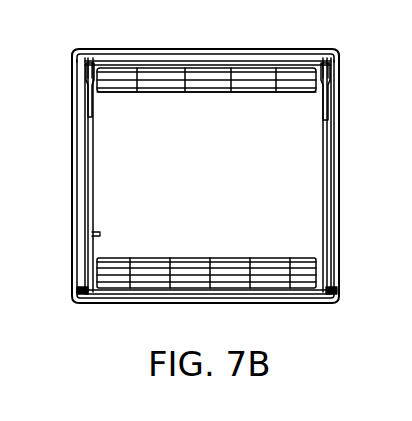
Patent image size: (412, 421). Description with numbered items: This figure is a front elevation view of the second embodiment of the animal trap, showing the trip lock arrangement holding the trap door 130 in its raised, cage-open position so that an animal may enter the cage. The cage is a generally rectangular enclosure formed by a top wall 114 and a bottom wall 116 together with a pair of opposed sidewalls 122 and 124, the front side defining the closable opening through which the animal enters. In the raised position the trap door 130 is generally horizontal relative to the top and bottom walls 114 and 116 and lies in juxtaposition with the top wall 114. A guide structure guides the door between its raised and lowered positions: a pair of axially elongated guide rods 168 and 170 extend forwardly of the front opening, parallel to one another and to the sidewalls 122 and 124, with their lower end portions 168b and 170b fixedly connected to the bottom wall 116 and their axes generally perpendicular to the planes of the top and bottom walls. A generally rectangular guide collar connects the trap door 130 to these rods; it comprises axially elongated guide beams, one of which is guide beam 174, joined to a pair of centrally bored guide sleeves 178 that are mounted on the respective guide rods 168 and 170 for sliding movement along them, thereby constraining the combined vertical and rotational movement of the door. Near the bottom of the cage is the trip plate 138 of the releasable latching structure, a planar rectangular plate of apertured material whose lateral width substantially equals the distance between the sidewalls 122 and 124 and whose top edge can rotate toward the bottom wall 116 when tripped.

The top wall 114 is at (141, 48).
The bottom wall 116 is at (153, 304).
The sidewall 122 is at (72, 166).
The sidewall 124 is at (342, 139).
The trap door 130 is at (230, 94).
The trip plate 138 is at (183, 256).
The guide rod 168 is at (88, 187).
The end portion of guide rod 168b is at (78, 290).
The guide rod 170 is at (330, 183).
The end portion of guide rod 170b is at (338, 291).
The guide beam 174 is at (206, 67).
The guide sleeve 178 is at (90, 96).